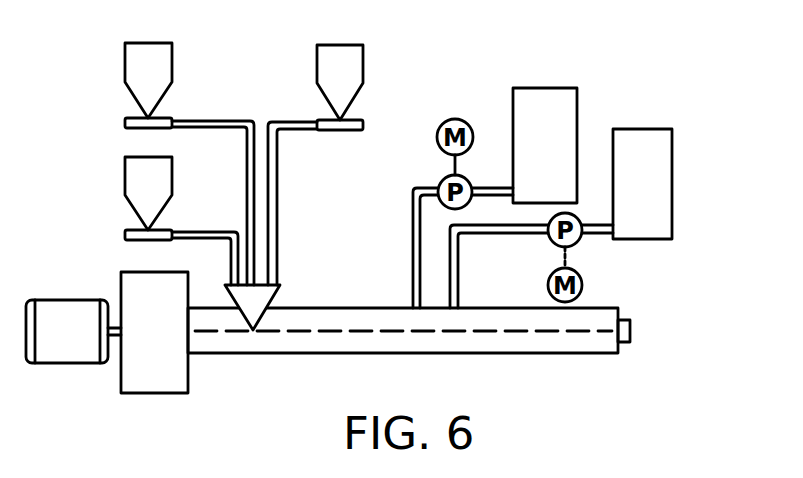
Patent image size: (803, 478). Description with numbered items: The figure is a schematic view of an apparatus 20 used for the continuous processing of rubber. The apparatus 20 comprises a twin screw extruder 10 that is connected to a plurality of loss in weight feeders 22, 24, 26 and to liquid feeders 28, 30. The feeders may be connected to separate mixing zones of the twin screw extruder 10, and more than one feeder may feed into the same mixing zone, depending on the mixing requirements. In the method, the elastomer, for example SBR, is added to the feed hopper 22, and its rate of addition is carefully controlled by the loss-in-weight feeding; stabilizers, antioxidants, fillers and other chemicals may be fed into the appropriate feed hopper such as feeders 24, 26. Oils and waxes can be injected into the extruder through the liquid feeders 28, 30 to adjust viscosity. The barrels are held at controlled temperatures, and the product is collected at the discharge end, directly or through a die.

The twin screw extruder 10 is at (153, 394).
The apparatus 20 is at (260, 382).
The feed hopper 22 is at (133, 175).
The loss in weight feeder 24 is at (133, 70).
The loss in weight feeder 26 is at (325, 67).
The liquid feeder 28 is at (563, 116).
The liquid feeder 30 is at (658, 180).